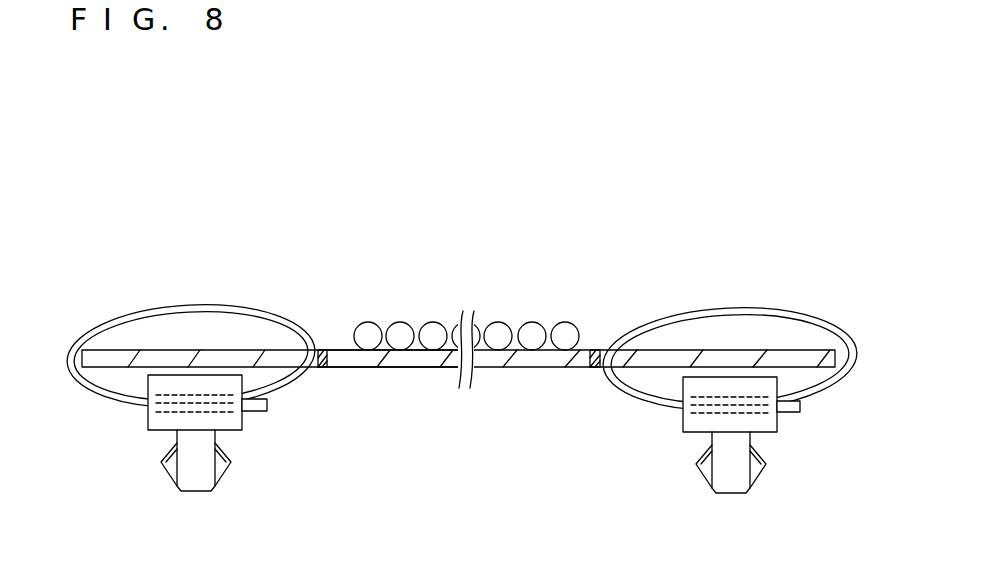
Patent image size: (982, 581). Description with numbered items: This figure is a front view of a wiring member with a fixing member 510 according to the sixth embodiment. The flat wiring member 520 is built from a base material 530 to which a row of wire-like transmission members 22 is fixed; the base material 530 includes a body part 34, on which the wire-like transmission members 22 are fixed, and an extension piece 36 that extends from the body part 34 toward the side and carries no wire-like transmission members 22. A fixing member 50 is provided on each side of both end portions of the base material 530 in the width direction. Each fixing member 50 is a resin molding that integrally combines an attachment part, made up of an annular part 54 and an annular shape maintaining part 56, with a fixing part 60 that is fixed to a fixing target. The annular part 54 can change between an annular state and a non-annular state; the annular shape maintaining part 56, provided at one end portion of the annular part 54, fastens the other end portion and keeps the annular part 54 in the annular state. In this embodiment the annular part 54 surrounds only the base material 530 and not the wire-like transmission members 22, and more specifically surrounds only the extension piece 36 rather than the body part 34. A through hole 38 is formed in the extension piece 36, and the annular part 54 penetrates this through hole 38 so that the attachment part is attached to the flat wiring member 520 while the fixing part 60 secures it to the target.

The wiring member with fixing member 510 is at (178, 154).
The flat wiring member 520 is at (413, 272).
The base material 530 is at (339, 349).
The wire-like transmission member 22 is at (431, 323).
The body part 34 is at (425, 369).
The extension piece 36 is at (190, 352).
The through hole 38 is at (322, 369).
The fixing member 50 is at (176, 490).
The annular part 54 is at (228, 308).
The annular shape maintaining part 56 is at (243, 426).
The fixing part 60 is at (213, 488).